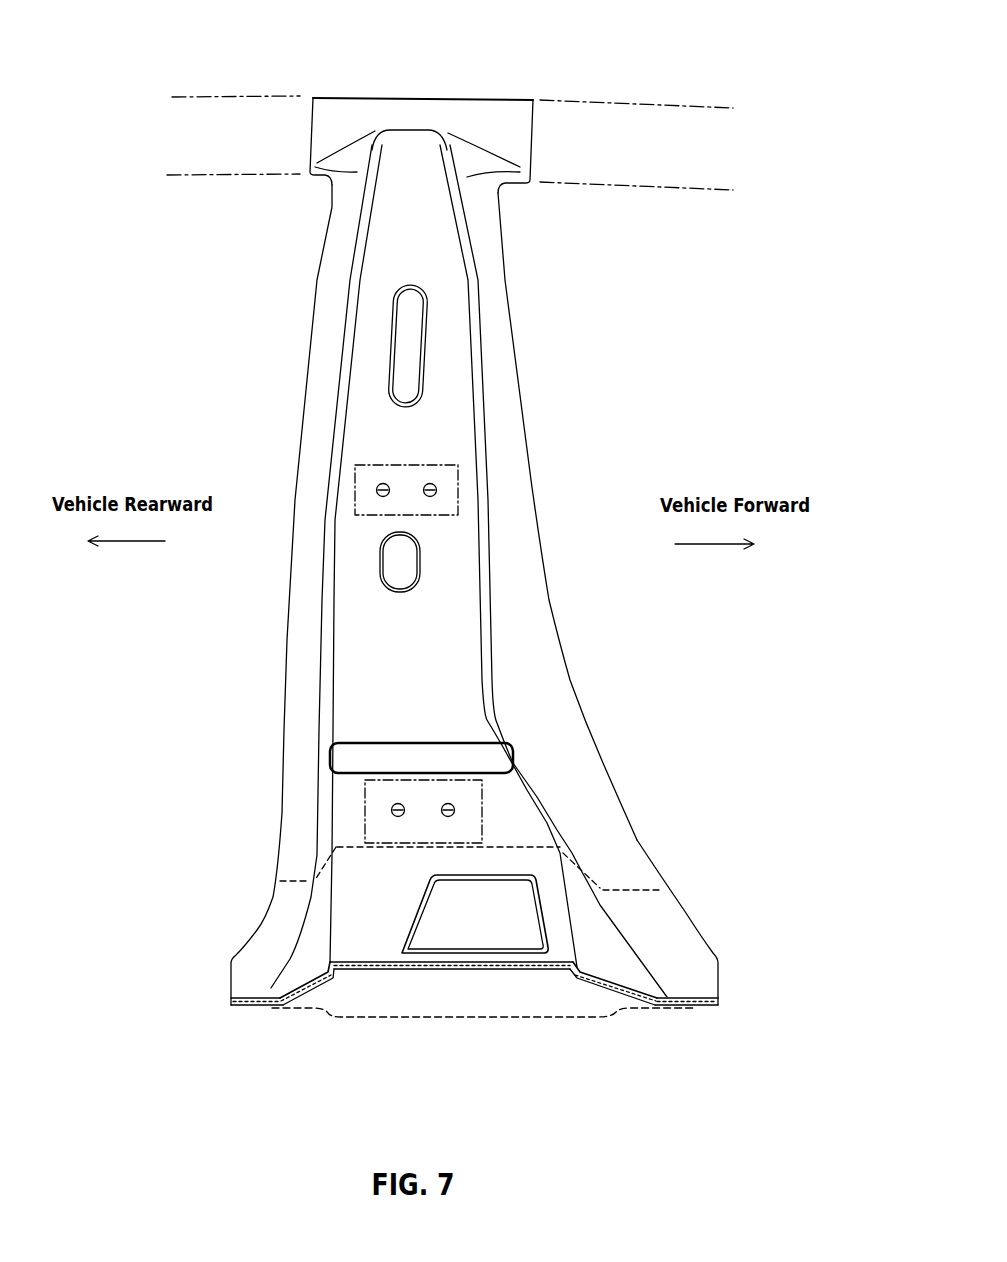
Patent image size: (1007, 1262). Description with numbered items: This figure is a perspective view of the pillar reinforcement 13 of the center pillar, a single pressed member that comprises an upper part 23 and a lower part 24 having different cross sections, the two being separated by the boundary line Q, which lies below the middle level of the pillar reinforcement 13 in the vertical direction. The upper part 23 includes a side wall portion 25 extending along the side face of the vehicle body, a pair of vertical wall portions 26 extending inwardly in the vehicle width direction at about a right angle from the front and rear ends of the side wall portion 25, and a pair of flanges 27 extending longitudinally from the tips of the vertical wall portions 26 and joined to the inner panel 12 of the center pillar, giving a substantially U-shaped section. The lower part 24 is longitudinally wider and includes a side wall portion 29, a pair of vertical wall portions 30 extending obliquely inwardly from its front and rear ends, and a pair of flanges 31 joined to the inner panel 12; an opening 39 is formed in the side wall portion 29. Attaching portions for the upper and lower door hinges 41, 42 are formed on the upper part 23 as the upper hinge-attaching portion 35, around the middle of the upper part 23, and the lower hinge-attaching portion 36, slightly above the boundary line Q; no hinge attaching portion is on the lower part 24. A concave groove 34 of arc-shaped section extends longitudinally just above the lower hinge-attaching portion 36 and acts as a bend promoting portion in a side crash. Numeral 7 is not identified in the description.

The roof side rail 7 is at (633, 97).
The inner panel 12 is at (447, 1020).
The pillar reinforcement 13 is at (262, 416).
The upper part 23 is at (583, 660).
The lower part 24 is at (703, 916).
The side wall portion 25 is at (445, 537).
The vertical wall portions 26 is at (330, 535).
The flanges 27 is at (308, 607).
The side wall portion 29 is at (447, 968).
The vertical wall portions 30 is at (316, 985).
The flanges 31 is at (253, 1010).
The concave groove 34 is at (415, 745).
The upper hinge-attaching portion 35 is at (409, 459).
The lower hinge-attaching portion 36 is at (351, 757).
The opening 39 is at (455, 917).
The upper door hinge 41 is at (432, 463).
The lower door hinge 42 is at (437, 745).
The boundary line Q is at (517, 848).